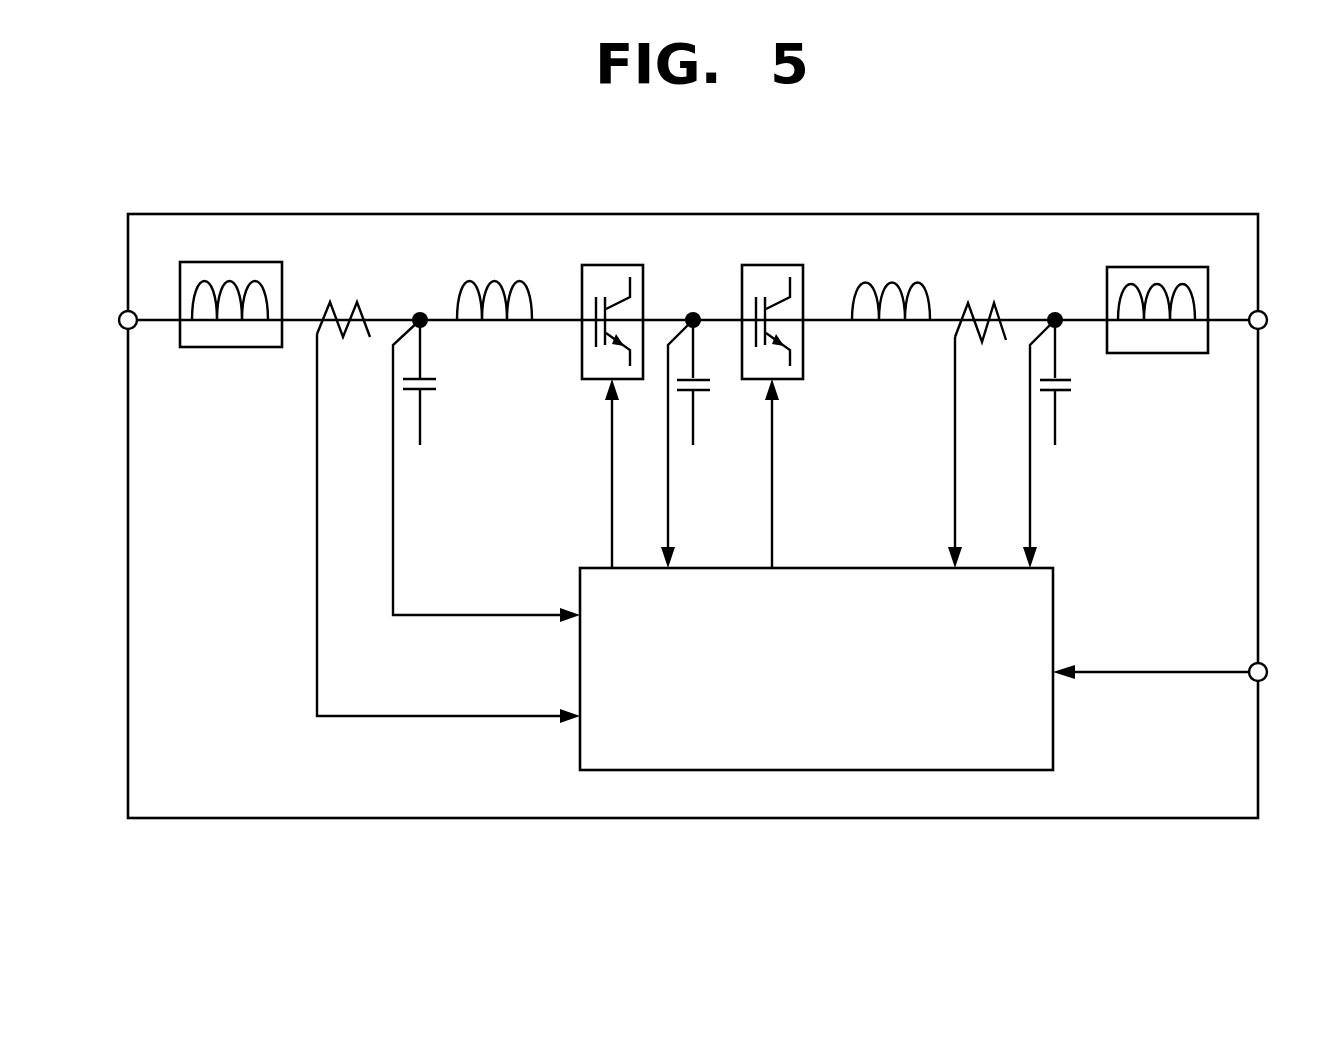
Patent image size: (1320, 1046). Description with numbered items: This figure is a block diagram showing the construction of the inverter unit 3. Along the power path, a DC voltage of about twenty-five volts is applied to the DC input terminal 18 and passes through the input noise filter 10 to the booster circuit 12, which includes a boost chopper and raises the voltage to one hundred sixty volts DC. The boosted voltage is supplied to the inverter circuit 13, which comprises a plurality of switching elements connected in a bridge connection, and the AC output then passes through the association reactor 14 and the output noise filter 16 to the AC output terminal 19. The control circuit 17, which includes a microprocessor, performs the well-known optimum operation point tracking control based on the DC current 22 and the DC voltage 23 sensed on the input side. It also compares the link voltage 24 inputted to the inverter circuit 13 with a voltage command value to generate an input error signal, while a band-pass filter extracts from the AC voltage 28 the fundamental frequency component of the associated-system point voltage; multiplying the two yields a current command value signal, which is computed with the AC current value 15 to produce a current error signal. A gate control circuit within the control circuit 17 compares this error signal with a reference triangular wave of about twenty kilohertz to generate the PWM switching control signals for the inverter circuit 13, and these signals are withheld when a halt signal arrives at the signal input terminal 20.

The inverter unit 3 is at (682, 818).
The input noise filter 10 is at (208, 262).
The booster circuit 12 is at (613, 265).
The inverter circuit 13 is at (773, 265).
The association reactor 14 is at (917, 283).
The AC current value 15 is at (953, 535).
The output noise filter 16 is at (1137, 267).
The control circuit 17 is at (1053, 618).
The DC input terminal 18 is at (131, 329).
The AC output terminal 19 is at (1256, 330).
The signal input terminal 20 is at (1252, 665).
The DC current 22 is at (317, 560).
The DC voltage 23 is at (393, 560).
The link voltage 24 is at (668, 495).
The AC voltage 28 is at (1030, 530).